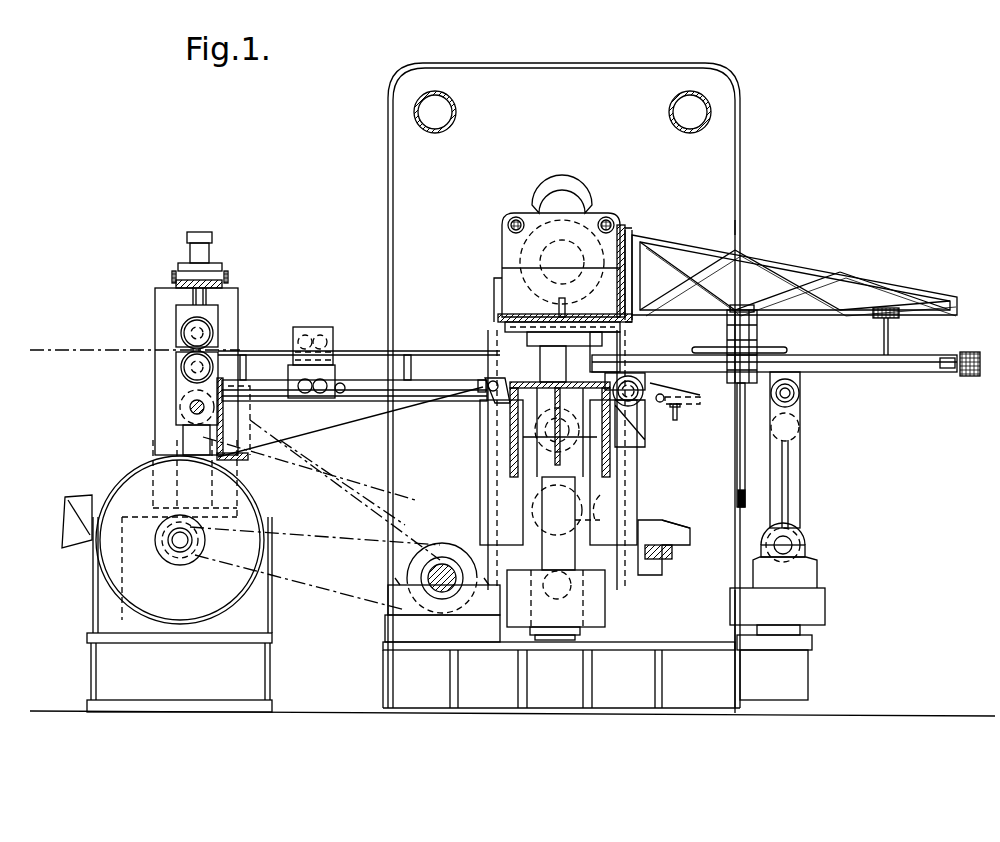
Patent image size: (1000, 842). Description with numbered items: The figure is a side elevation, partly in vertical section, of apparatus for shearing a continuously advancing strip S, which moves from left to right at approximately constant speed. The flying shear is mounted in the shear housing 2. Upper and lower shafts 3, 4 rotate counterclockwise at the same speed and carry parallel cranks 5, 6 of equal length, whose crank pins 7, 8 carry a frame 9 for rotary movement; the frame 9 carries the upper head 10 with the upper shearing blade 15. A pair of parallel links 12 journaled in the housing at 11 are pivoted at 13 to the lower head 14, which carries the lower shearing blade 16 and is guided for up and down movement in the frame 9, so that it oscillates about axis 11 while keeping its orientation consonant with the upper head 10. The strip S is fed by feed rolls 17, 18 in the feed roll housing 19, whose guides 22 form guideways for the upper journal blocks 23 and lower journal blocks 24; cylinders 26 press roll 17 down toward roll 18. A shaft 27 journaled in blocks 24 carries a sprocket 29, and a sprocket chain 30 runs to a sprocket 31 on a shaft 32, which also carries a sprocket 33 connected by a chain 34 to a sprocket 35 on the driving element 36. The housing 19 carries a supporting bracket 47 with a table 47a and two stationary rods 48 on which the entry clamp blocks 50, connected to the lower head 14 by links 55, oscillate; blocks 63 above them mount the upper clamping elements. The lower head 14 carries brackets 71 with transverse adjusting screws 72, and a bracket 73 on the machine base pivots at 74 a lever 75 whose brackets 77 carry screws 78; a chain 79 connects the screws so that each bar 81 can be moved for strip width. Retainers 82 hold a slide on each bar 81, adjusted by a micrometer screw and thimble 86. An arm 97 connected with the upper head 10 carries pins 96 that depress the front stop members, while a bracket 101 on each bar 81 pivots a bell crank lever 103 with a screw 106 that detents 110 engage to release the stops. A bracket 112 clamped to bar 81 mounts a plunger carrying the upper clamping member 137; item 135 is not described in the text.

The shear housing 2 is at (393, 85).
The upper shaft 3 is at (548, 195).
The lower shaft 4 is at (490, 460).
The crank 5 is at (590, 190).
The crank 6 is at (610, 490).
The crank pin 7 is at (530, 255).
The crank pin 8 is at (600, 508).
The frame 9 is at (494, 308).
The upper head 10 is at (530, 273).
The journal 11 is at (600, 620).
The parallel links 12 is at (540, 485).
The pivotal connection 13 is at (525, 432).
The lower head 14 is at (610, 455).
The upper shearing blade 15 is at (520, 322).
The lower shearing blade 16 is at (535, 338).
The feed roll 17 is at (185, 330).
The feed roll 18 is at (185, 368).
The feed roll housing 19 is at (236, 290).
The guides 22 is at (158, 305).
The upper journal blocks 23 is at (212, 315).
The lower journal blocks 24 is at (200, 427).
The cylinders 26 is at (210, 256).
The shaft 27 is at (190, 407).
The sprocket 29 is at (195, 445).
The sprocket chain 30 is at (350, 485).
The sprocket 31 is at (450, 595).
The shaft 32 is at (442, 578).
The sprocket 33 is at (405, 598).
The sprocket chain 34 is at (292, 588).
The sprocket 35 is at (193, 555).
The driving element 36 is at (118, 476).
The supporting bracket 47 is at (320, 430).
The table 47a is at (400, 352).
The supporting and guiding rods 48 is at (264, 395).
The block 50 is at (340, 365).
The links 55 is at (432, 392).
The blocks 63 is at (326, 330).
The brackets 71 is at (640, 430).
The transverse adjusting screw 72 is at (630, 372).
The bracket 73 is at (815, 556).
The pivot 74 is at (790, 543).
The lever 75 is at (800, 470).
The brackets 77 is at (800, 406).
The transverse adjusting screw 78 is at (799, 393).
The sprocket chain 79 is at (737, 420).
The bar 81 is at (858, 375).
The retainers 82 is at (897, 375).
The thimble 86 is at (970, 378).
The pin 96 is at (890, 330).
The arm 97 is at (845, 268).
The bracket 101 is at (688, 400).
The bell crank lever 103 is at (652, 402).
The screw 106 is at (676, 420).
The detents 110 is at (664, 520).
The bracket 112 is at (758, 322).
The stop 135 is at (738, 470).
The upper clamping member 137 is at (790, 350).
The strip S is at (68, 345).